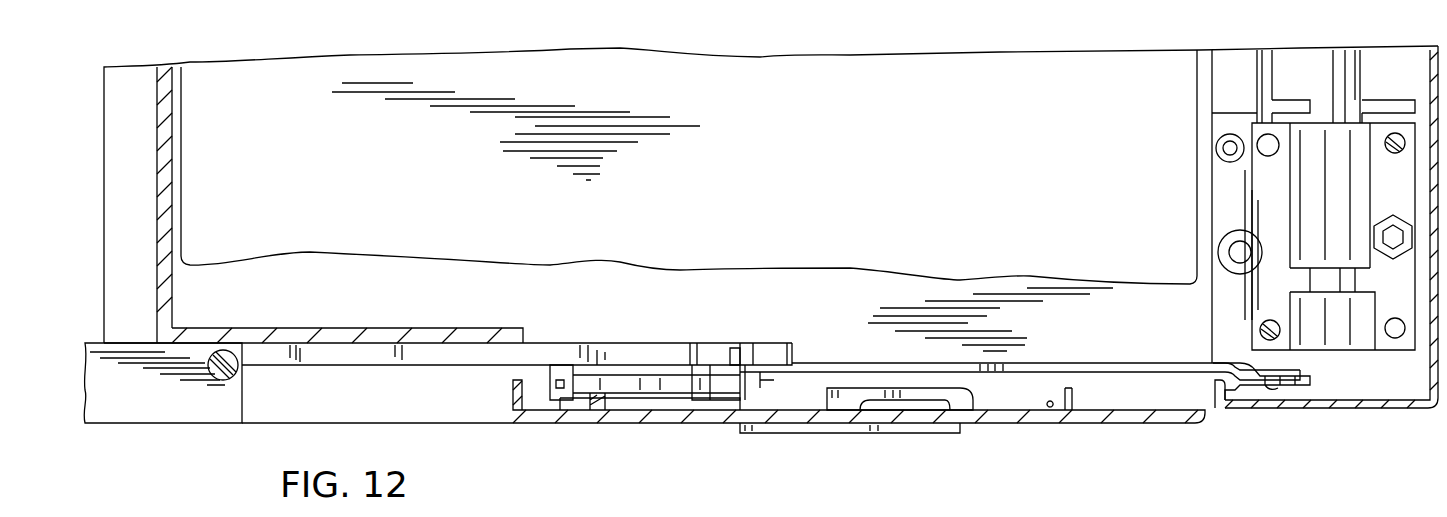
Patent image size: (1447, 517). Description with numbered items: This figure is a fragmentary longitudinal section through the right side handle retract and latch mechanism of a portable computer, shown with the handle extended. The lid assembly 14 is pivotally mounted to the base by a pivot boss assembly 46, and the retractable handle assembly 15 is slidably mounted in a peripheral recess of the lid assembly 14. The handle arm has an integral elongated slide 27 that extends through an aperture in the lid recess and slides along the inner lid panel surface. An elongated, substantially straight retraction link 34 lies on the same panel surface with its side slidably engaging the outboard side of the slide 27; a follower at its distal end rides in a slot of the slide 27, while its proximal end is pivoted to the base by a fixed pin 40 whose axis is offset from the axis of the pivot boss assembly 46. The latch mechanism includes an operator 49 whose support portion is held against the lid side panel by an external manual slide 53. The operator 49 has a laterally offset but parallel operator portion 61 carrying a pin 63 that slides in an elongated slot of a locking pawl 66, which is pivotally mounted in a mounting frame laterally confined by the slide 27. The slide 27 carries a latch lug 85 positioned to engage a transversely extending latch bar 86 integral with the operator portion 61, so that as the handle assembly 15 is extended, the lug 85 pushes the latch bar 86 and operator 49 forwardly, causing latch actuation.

The lid assembly 14 is at (492, 434).
The retractable handle assembly 15 is at (193, 432).
The slide 27 is at (565, 340).
The retraction link 34 is at (1062, 363).
The pin 40 is at (1275, 387).
The pivot boss assembly 46 is at (1348, 352).
The latch operator 49 is at (860, 388).
The manual slide 53 is at (835, 435).
The operator portion 61 is at (645, 405).
The pin 63 is at (603, 395).
The locking pawl 66 is at (633, 375).
The latch lug 85 is at (750, 340).
The latch bar 86 is at (730, 355).